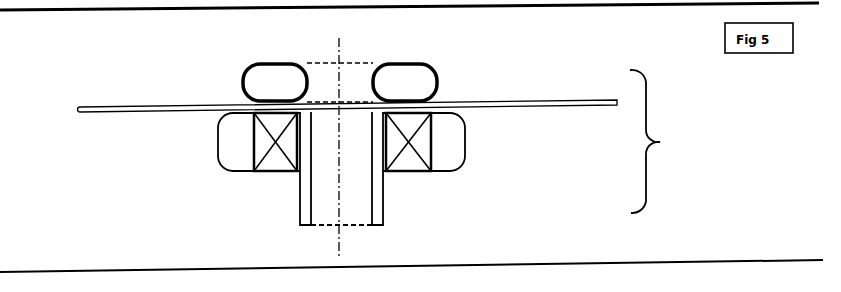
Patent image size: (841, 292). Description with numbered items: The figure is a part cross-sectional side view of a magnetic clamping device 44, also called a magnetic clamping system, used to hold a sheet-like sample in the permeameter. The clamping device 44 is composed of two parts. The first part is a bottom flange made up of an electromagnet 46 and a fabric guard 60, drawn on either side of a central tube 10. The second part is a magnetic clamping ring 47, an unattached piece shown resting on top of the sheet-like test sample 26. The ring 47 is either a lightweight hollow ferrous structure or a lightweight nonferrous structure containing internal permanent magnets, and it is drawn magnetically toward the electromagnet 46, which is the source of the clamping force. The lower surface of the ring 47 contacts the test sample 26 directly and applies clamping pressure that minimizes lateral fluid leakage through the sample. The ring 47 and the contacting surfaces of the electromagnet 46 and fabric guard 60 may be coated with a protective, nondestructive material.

The test sample 26 is at (150, 107).
The magnetic clamping ring 47 is at (428, 78).
The fabric guard 60 is at (227, 163).
The electromagnet 46 is at (272, 168).
The core tube 10 is at (385, 205).
The clamping device 44 is at (660, 141).